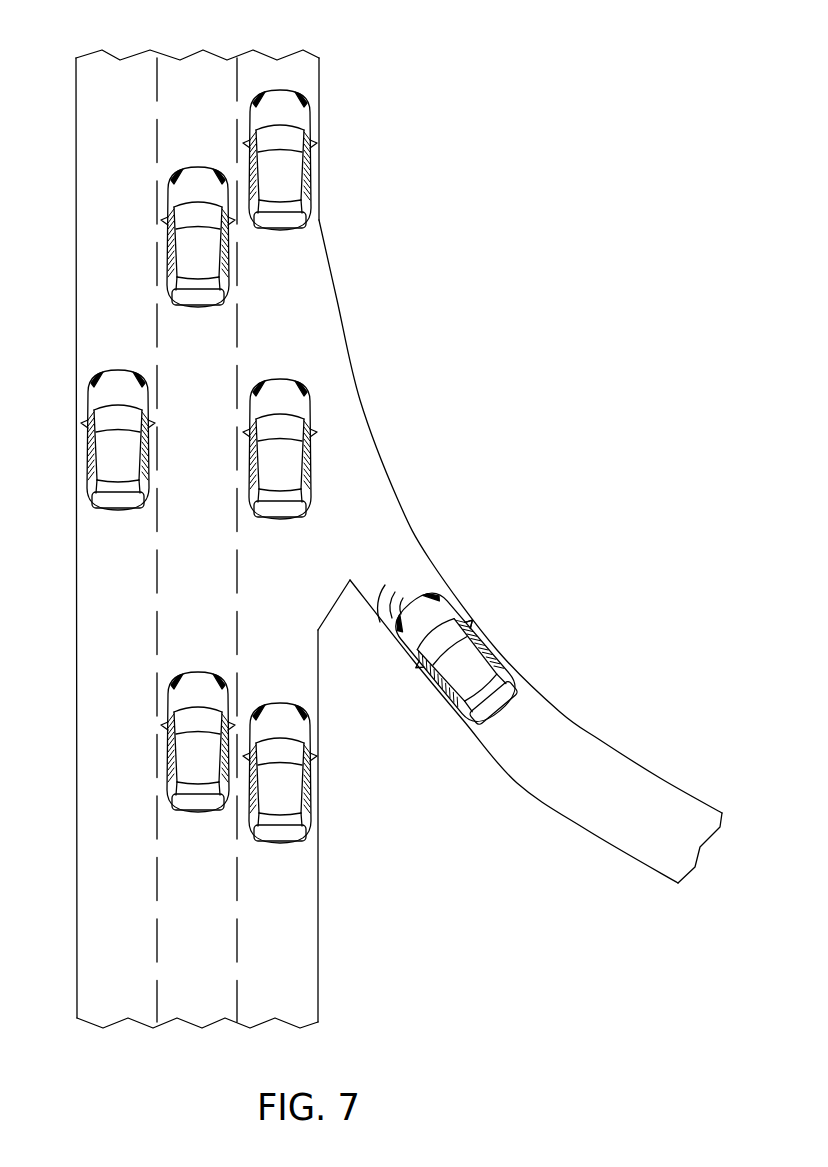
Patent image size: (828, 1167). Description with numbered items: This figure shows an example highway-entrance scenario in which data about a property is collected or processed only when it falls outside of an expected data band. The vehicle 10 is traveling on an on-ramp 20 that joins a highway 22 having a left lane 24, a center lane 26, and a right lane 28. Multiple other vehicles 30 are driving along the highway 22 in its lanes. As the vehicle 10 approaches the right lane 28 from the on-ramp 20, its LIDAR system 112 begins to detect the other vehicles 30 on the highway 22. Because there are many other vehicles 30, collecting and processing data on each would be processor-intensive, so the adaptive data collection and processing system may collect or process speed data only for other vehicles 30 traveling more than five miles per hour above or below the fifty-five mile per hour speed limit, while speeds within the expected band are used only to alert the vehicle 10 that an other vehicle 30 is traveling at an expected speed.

The vehicle 10 is at (473, 733).
The on-ramp 20 is at (598, 752).
The highway 22 is at (76, 262).
The left lane 24 is at (93, 62).
The center lane 26 is at (200, 60).
The right lane 28 is at (315, 62).
The other vehicles 30 is at (279, 231).
The LIDAR system 112 is at (466, 630).